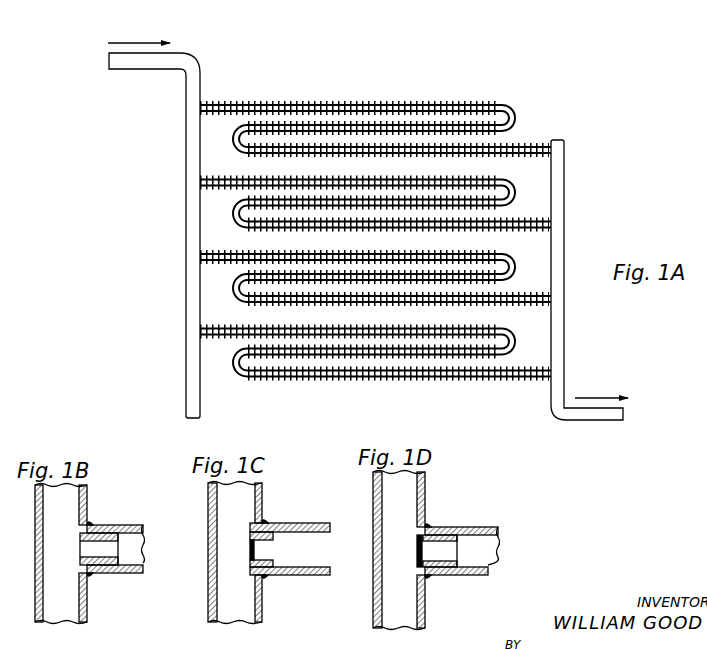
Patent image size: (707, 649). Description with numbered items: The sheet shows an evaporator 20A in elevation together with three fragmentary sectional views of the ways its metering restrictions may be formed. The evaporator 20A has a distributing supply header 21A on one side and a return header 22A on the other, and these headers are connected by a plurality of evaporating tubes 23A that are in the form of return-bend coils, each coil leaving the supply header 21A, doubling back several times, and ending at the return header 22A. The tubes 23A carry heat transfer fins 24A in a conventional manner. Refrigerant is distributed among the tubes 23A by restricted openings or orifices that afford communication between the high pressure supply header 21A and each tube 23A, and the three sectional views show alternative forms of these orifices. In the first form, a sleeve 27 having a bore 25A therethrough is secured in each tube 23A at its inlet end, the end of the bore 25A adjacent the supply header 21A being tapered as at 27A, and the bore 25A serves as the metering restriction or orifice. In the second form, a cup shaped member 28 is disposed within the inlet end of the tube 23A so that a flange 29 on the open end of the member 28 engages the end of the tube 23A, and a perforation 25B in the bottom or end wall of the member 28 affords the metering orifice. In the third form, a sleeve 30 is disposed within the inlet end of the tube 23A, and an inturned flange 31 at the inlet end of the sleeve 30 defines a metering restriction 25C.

In FIG. 1A, the evaporator 20A is at (374, 102).
In FIG. 1A, the distributing supply header 21A is at (186, 243).
In FIG. 1B, the distributing supply header 21A is at (88, 498).
In FIG. 1C, the distributing supply header 21A is at (262, 494).
In FIG. 1D, the distributing supply header 21A is at (426, 500).
In FIG. 1A, the return header 22A is at (565, 186).
In FIG. 1A, the evaporating tubes 23A is at (514, 115).
In FIG. 1B, the evaporating tubes 23A is at (132, 525).
In FIG. 1C, the evaporating tubes 23A is at (312, 523).
In FIG. 1D, the evaporating tubes 23A is at (483, 525).
In FIG. 1A, the heat transfer fins 24A is at (447, 104).
In FIG. 1B, the bore 25A is at (110, 552).
In FIG. 1C, the perforation 25B is at (275, 552).
In FIG. 1D, the metering restriction 25C is at (415, 552).
In FIG. 1B, the sleeve 27 is at (98, 573).
In FIG. 1B, the tapered end 27A is at (80, 562).
In FIG. 1C, the cup shaped member 28 is at (270, 575).
In FIG. 1C, the flange 29 is at (256, 562).
In FIG. 1D, the sleeve 30 is at (440, 575).
In FIG. 1D, the inturned flange 31 is at (416, 560).